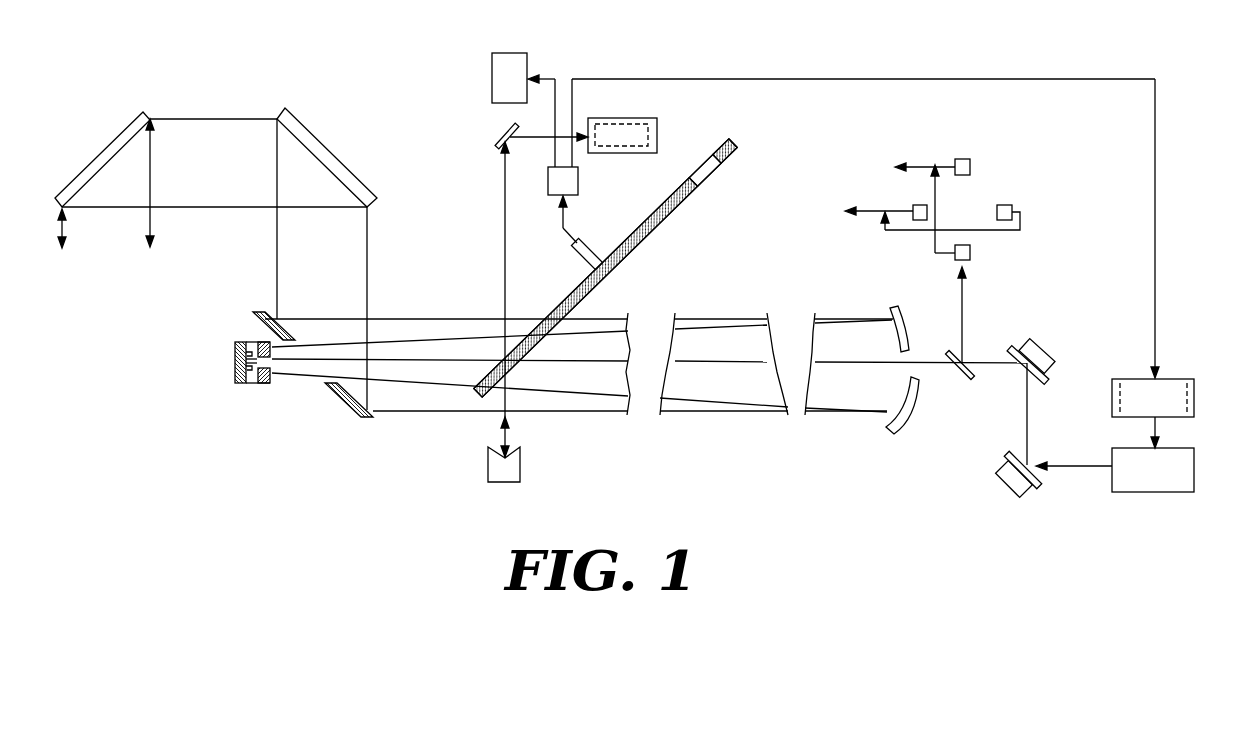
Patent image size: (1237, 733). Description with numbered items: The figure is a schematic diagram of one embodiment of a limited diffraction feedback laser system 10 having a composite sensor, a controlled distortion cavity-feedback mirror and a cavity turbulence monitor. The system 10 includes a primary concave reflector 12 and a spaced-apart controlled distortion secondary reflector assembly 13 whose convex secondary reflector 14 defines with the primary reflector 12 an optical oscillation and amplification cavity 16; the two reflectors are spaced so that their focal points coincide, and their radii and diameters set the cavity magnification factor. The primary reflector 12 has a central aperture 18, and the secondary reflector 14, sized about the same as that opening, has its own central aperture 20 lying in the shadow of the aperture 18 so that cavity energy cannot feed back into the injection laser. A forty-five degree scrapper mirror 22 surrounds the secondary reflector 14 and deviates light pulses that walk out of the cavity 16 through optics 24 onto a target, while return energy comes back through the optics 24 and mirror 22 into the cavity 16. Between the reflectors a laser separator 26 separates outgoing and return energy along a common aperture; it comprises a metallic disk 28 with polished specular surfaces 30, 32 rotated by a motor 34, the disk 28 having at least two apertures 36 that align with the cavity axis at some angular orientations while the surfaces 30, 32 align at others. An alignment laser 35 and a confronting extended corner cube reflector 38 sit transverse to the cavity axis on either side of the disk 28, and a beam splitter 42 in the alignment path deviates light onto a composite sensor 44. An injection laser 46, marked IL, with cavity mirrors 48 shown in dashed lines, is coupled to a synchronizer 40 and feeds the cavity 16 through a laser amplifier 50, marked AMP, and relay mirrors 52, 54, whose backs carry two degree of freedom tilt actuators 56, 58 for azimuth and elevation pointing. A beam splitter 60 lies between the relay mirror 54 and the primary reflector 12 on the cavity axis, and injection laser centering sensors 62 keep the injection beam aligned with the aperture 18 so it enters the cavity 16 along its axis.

The limited diffraction feedback laser system 10 is at (299, 424).
The primary concave reflector 12 is at (891, 306).
The controlled distortion secondary reflector assembly 13 is at (246, 370).
The convex secondary reflector 14 is at (270, 385).
The optical oscillation and amplification cavity 16 is at (657, 311).
The central aperture of primary reflector 18 is at (888, 375).
The central aperture of secondary reflector 20 is at (281, 367).
The scrapper mirror 22 is at (263, 314).
The optics 24 is at (228, 112).
The laser separator 26 is at (626, 256).
The metallic disk 28 is at (586, 288).
The polished specular surface 30 is at (725, 151).
The polished specular surface 32 is at (733, 143).
The motor 34 is at (577, 258).
The alignment laser 35 is at (492, 68).
The apertures of disk 36 is at (705, 171).
The extended corner cube reflector 38 is at (520, 467).
The synchronizer 40 is at (578, 183).
The beam splitter 42 is at (497, 134).
The composite sensor 44 is at (621, 118).
The injection laser 46 is at (1174, 383).
The cavity mirrors of injection laser 48 is at (1180, 388).
The laser amplifier 50 is at (1195, 470).
The relay mirror 52 is at (1030, 462).
The relay mirror 54 is at (1049, 372).
The tilt actuator 56 is at (1008, 478).
The tilt actuator 58 is at (1038, 340).
The beam splitter 60 is at (963, 380).
The injection laser centering sensors 62 is at (987, 185).